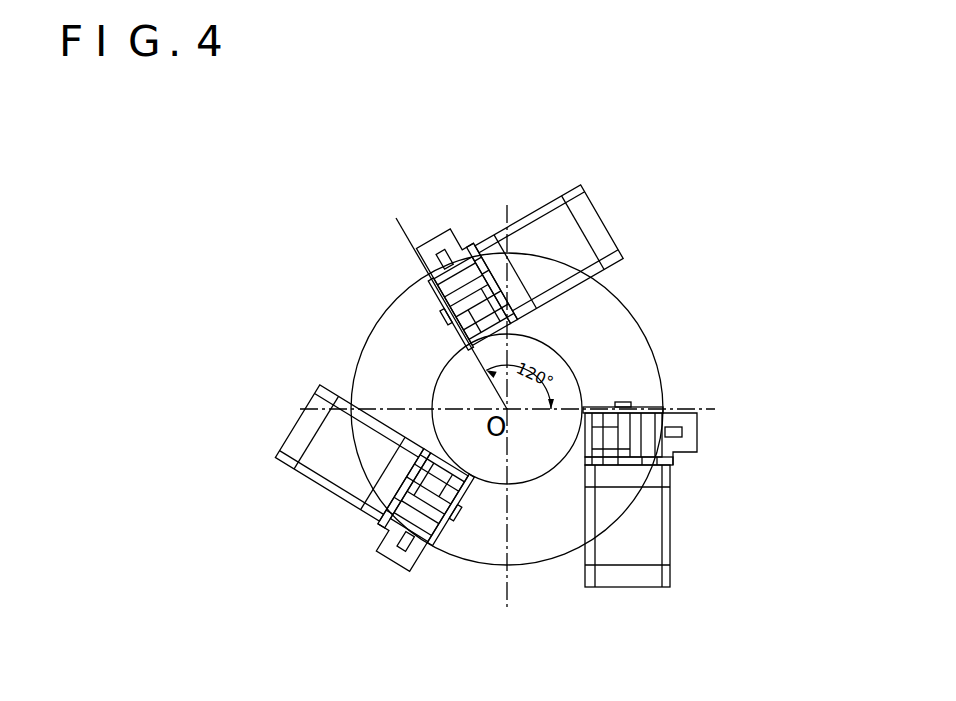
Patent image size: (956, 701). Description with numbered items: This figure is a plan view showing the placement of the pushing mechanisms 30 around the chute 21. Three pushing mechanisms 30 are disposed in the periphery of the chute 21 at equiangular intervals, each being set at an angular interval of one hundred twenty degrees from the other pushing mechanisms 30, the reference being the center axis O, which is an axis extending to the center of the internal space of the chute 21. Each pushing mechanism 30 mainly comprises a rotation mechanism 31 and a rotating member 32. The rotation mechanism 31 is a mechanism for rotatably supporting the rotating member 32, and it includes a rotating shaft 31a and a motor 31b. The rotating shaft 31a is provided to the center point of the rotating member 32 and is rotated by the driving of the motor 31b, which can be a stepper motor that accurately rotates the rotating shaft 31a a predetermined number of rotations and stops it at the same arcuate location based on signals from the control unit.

The chute 21 is at (560, 346).
The pushing mechanism 30 is at (762, 402).
The rotation mechanism 31 is at (528, 417).
The rotating shaft 31a is at (426, 310).
The motor 31b is at (423, 252).
The rotating member 32 is at (600, 404).